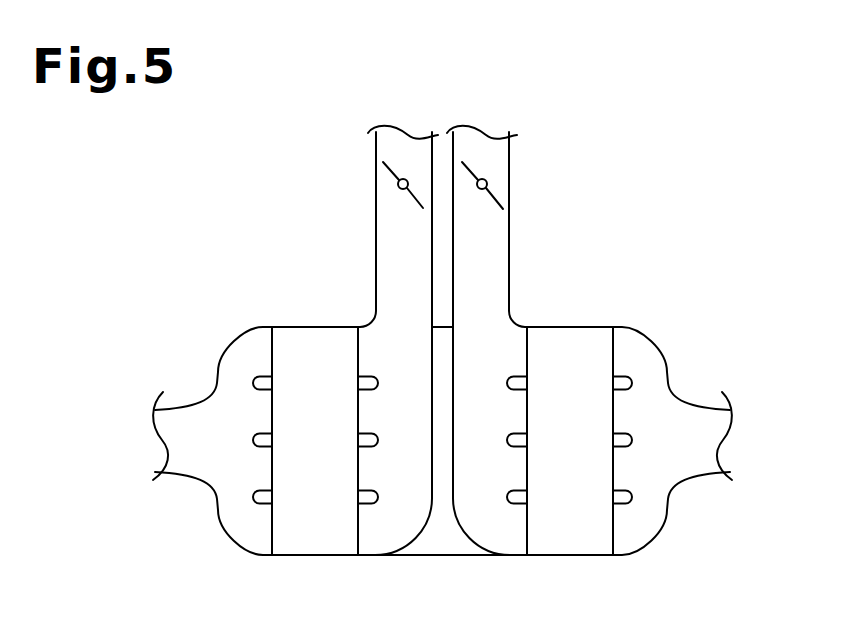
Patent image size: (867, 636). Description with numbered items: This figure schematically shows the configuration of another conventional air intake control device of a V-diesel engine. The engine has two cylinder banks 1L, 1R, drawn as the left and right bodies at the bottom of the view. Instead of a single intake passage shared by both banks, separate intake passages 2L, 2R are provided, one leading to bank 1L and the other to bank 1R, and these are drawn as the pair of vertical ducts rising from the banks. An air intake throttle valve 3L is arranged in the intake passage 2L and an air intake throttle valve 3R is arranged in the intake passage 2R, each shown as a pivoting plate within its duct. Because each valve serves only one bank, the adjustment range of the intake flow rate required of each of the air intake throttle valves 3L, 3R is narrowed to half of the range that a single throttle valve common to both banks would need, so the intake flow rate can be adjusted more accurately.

The bank 1L is at (310, 555).
The bank 1R is at (565, 555).
The intake passage 2L is at (376, 263).
The intake passage 2R is at (511, 252).
The air intake throttle valve 3L is at (398, 184).
The air intake throttle valve 3R is at (487, 182).